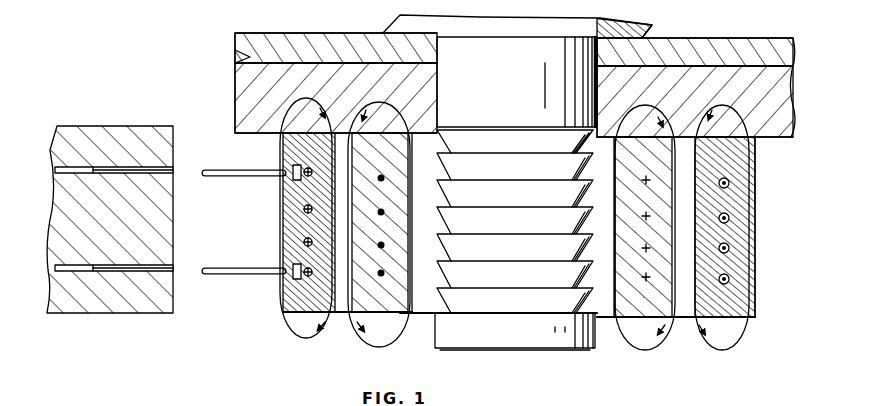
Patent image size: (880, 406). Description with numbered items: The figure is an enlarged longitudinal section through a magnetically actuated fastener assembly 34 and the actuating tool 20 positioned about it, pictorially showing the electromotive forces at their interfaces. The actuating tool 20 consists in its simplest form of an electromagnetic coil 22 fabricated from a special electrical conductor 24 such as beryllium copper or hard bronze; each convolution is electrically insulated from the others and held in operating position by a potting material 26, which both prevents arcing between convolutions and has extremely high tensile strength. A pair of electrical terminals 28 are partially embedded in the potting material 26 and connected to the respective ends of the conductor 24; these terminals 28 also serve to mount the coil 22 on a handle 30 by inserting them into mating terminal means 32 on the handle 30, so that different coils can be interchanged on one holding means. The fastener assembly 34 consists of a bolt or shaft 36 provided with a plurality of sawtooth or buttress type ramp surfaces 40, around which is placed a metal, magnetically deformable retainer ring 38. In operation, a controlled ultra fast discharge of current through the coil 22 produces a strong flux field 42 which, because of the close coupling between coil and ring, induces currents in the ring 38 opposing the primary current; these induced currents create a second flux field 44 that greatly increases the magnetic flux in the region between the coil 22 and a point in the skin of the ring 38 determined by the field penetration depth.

The actuating tool 20 is at (260, 313).
The electromagnetic coil 22 is at (734, 240).
The electrical conductor 24 is at (727, 188).
The potting material 26 is at (756, 240).
The electrical terminals 28 is at (255, 178).
The handle 30 is at (138, 315).
The mating terminal means 32 is at (175, 171).
The magnetically actuated fastener assembly 34 is at (608, 335).
The bolt or shaft 36 is at (529, 104).
The retainer ring 38 is at (388, 245).
The ramp surfaces 40 is at (436, 318).
The flux field 42 is at (300, 345).
The flux field 44 is at (668, 346).